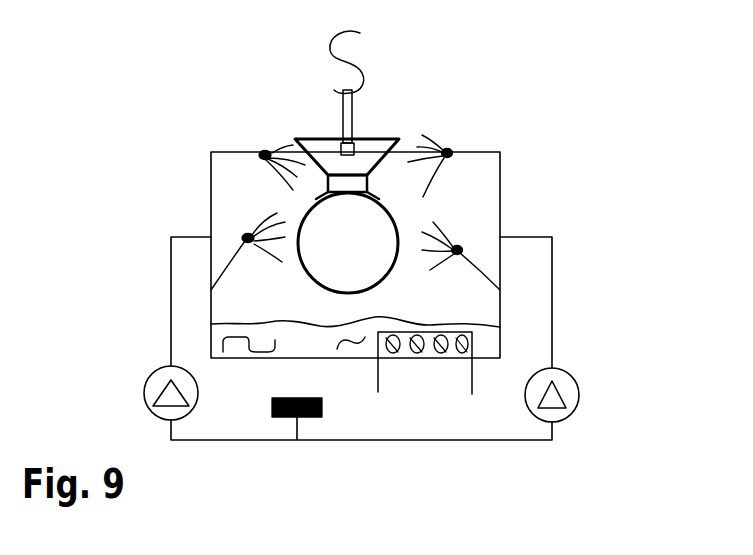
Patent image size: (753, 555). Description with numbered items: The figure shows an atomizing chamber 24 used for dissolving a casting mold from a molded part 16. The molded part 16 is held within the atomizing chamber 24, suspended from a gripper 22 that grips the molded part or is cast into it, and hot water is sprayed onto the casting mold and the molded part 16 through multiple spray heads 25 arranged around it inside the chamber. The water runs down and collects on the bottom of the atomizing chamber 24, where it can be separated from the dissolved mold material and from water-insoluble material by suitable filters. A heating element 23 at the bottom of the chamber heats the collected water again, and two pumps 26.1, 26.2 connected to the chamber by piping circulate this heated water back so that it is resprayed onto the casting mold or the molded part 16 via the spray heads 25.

The molded part 16 is at (318, 247).
The gripper 22 is at (377, 147).
The heating element 23 is at (473, 377).
The atomizing chamber 24 is at (500, 196).
The spray heads 25 is at (265, 155).
The pump 26.1 is at (144, 399).
The pump 26.2 is at (580, 397).